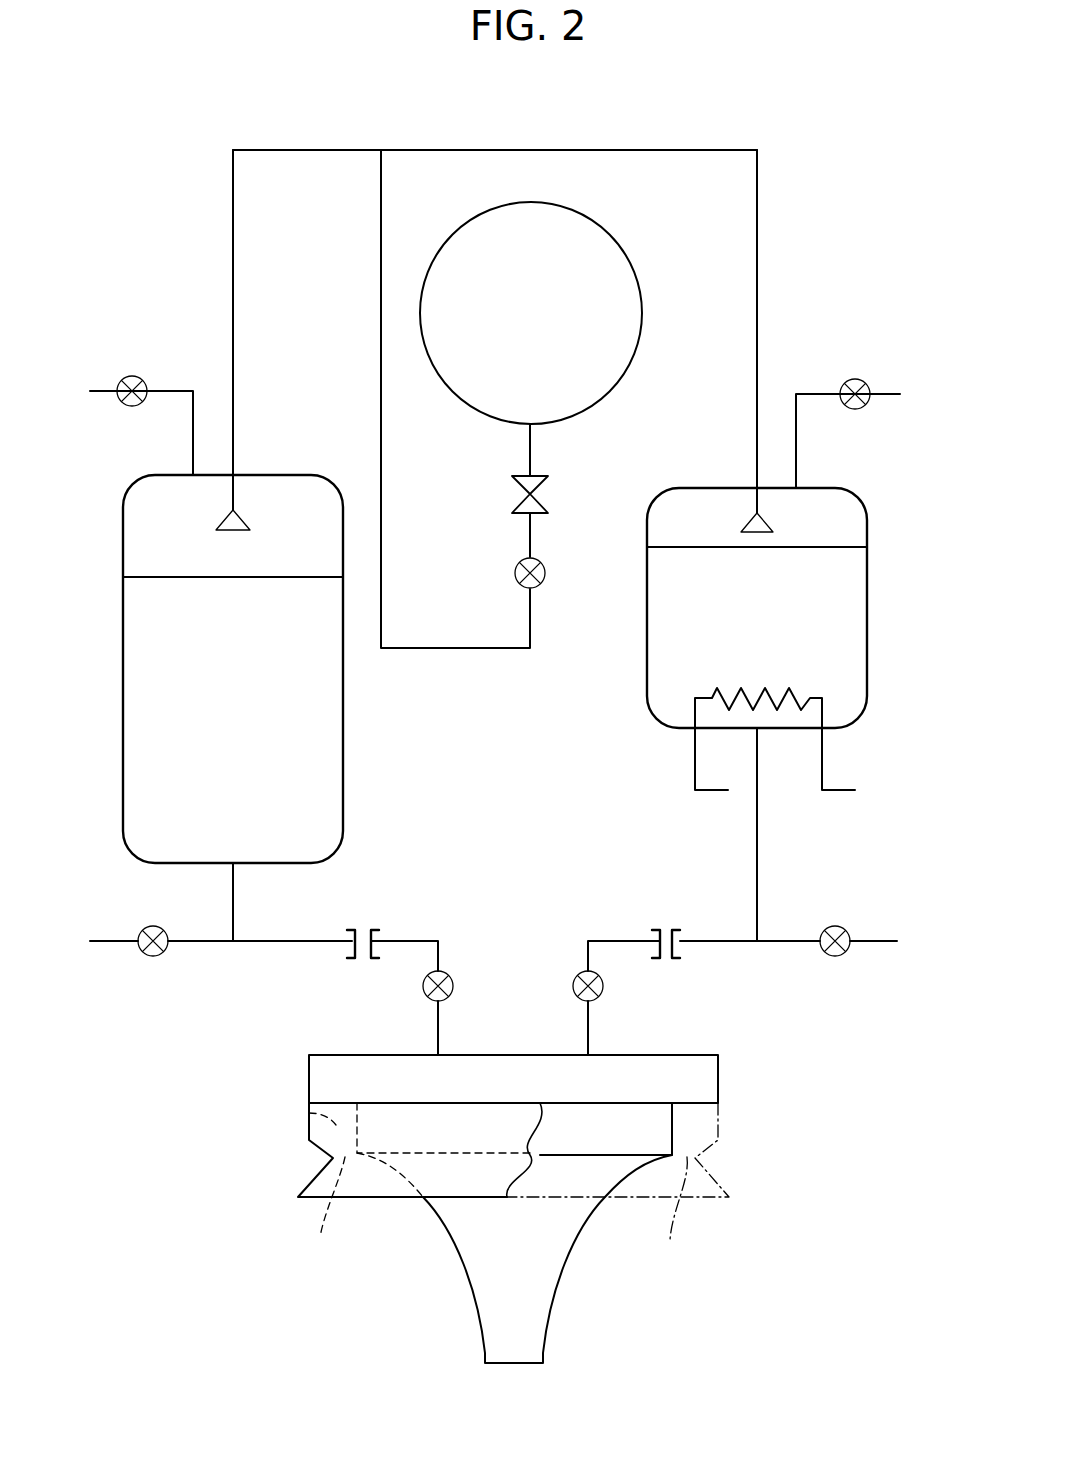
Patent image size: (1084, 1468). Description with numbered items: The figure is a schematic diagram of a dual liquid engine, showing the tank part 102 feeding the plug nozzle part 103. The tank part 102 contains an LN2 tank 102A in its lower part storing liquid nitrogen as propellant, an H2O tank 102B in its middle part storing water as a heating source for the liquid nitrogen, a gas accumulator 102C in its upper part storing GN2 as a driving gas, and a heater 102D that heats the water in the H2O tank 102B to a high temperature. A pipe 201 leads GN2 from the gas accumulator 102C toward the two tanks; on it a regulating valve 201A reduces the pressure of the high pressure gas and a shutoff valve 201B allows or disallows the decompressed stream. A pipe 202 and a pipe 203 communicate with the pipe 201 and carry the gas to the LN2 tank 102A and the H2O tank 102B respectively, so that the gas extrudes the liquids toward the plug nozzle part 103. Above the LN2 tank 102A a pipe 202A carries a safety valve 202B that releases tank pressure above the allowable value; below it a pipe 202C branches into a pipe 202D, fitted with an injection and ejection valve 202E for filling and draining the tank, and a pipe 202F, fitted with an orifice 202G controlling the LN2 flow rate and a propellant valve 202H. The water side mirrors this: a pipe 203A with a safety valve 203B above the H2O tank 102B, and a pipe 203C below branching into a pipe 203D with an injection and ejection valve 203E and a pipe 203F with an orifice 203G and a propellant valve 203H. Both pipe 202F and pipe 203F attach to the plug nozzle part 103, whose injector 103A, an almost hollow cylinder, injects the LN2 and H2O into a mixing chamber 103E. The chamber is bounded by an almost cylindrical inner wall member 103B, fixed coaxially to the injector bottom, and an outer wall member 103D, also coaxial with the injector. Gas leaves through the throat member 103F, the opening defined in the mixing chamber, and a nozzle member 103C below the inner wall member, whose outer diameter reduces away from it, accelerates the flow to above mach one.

The tank part 102 is at (692, 130).
The LN2 tank 102A is at (297, 727).
The H2O tank 102B is at (666, 581).
The gas accumulator 102C is at (595, 273).
The heater 102D is at (705, 707).
The pipe 201 is at (381, 472).
The regulating valve 201A is at (540, 488).
The shutoff valve 201B is at (546, 578).
The pipe 202 is at (287, 150).
The pipe 202A is at (165, 395).
The safety valve 202B is at (132, 376).
The pipe 202C is at (233, 910).
The pipe 202D is at (200, 941).
The injection and ejection valve 202E is at (153, 956).
The pipe 202F is at (290, 943).
The orifice 202G is at (368, 928).
The propellant valve 202H is at (454, 985).
The pipe 203 is at (484, 150).
The pipe 203A is at (796, 430).
The safety valve 203B is at (850, 378).
The pipe 203C is at (757, 828).
The pipe 203D is at (788, 941).
The injection and ejection valve 203E is at (836, 957).
The pipe 203F is at (712, 941).
The orifice 203G is at (658, 928).
The propellant valve 203H is at (603, 987).
The plug nozzle part 103 is at (408, 1223).
The injector 103A is at (345, 1077).
The inner wall member 103B is at (650, 1132).
The nozzle member 103C is at (520, 1292).
The outer wall member 103D is at (309, 1132).
The mixing chamber 103E is at (309, 1113).
The throat member 103F is at (495, 1214).